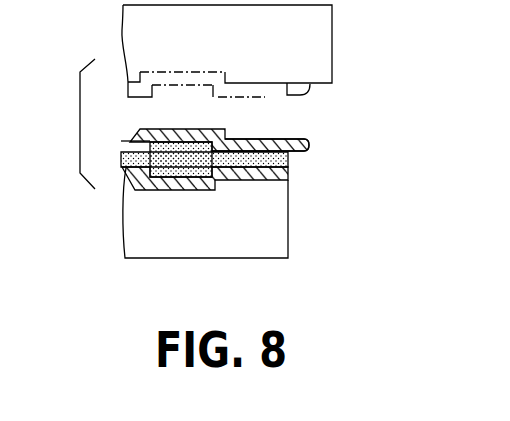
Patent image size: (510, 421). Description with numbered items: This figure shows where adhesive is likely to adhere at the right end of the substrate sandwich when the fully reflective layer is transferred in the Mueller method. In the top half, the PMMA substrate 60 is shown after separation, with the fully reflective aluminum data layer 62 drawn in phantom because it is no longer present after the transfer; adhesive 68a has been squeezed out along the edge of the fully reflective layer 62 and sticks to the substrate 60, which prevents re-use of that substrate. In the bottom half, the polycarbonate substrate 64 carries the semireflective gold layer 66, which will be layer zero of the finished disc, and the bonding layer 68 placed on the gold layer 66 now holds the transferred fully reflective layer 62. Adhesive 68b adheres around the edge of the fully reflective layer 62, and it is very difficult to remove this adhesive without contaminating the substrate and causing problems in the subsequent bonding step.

The PMMA substrate 60 is at (332, 13).
The fully reflective aluminum data layer 62 is at (270, 92).
The substrate 64 is at (288, 223).
The semireflective gold layer 66 is at (288, 173).
The bonding layer 68 is at (288, 153).
The adhering adhesive on substrate 68a is at (305, 96).
The adhering adhesive around edge of reflective layer 68b is at (306, 146).